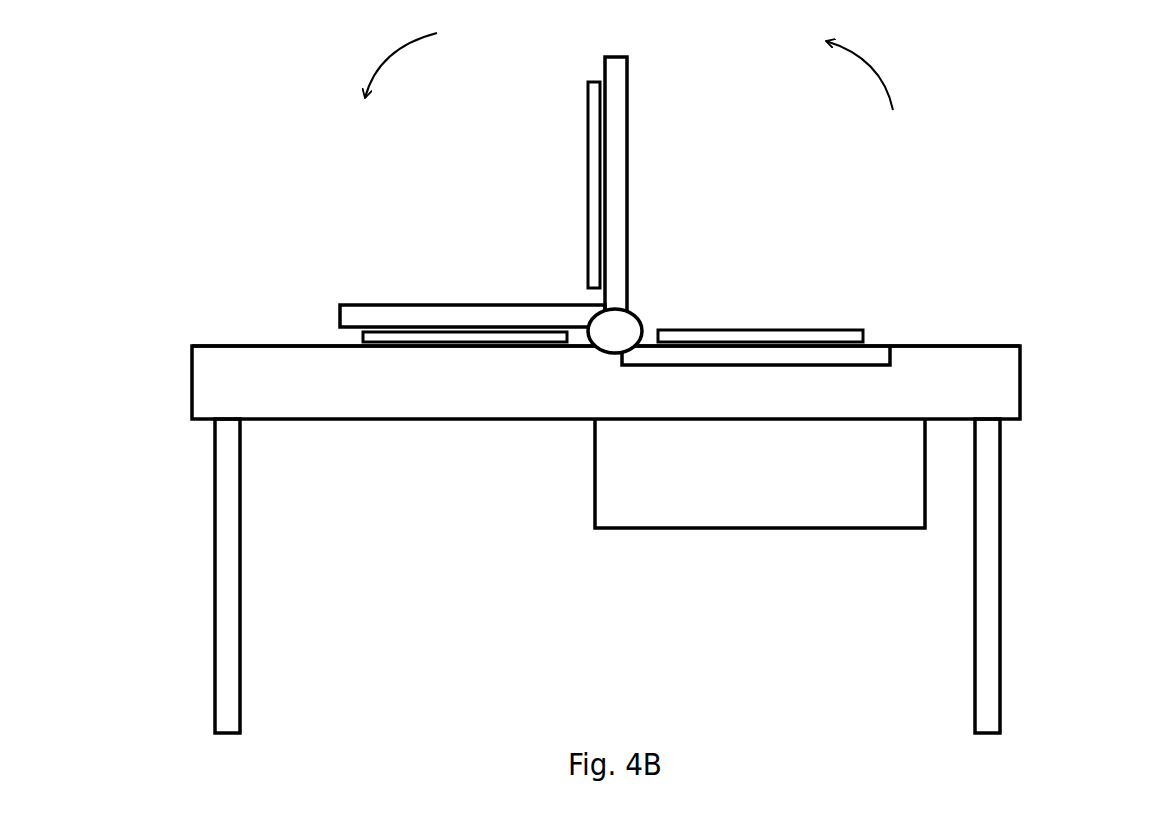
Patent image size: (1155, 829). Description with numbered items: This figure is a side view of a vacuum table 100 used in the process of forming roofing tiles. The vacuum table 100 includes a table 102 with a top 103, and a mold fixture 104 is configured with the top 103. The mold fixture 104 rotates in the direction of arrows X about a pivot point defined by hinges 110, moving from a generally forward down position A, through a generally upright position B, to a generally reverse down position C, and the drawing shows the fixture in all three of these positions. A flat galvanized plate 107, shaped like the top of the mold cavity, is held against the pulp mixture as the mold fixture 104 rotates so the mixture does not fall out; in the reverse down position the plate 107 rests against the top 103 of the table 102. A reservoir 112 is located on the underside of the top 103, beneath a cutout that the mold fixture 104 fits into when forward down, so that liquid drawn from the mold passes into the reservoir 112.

The vacuum table 100 is at (1004, 163).
The table 102 is at (192, 380).
The top 103 is at (240, 346).
The mold fixture 104 is at (480, 305).
The galvanized plate 107 is at (362, 337).
The hinges 110 is at (637, 312).
The reservoir 112 is at (640, 530).